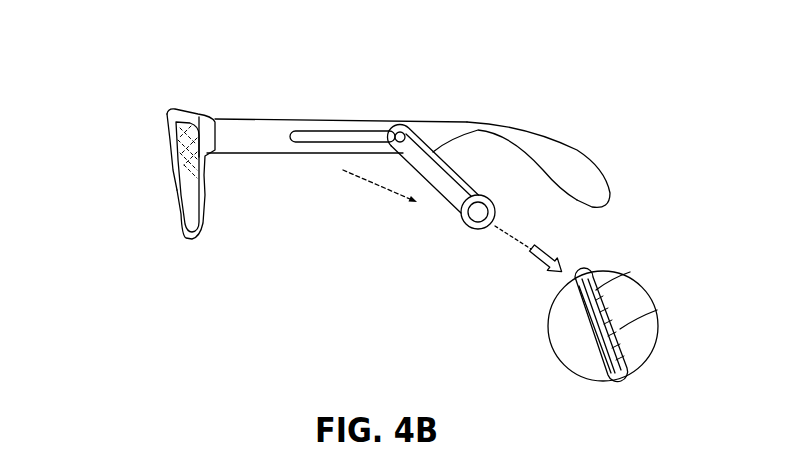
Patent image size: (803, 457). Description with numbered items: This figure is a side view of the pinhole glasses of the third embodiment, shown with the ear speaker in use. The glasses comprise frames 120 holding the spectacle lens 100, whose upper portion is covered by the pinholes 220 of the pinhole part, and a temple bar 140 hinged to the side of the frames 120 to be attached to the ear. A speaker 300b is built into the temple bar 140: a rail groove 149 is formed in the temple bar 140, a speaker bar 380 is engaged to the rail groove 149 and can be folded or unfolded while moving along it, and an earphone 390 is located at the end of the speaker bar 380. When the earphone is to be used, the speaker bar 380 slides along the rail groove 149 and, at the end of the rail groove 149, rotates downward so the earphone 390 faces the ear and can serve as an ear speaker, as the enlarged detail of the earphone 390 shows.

The spectacle lens 100 is at (180, 193).
The frame 120 is at (190, 236).
The temple bar 140 is at (253, 120).
The rail groove 149 is at (320, 133).
The pinhole 220 is at (177, 183).
The speaker 300b is at (429, 134).
The speaker bar 380 is at (453, 192).
The earphone 390 is at (483, 228).